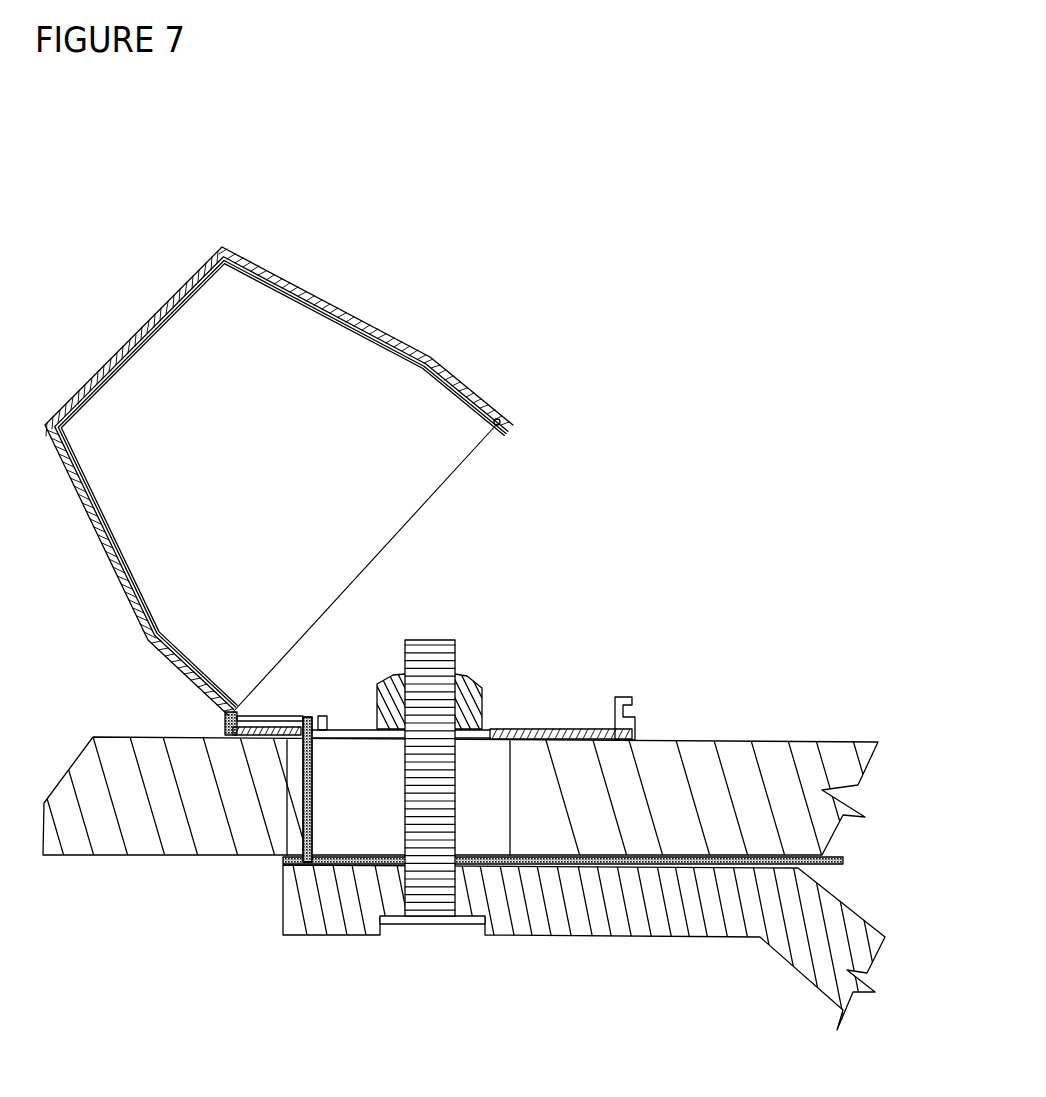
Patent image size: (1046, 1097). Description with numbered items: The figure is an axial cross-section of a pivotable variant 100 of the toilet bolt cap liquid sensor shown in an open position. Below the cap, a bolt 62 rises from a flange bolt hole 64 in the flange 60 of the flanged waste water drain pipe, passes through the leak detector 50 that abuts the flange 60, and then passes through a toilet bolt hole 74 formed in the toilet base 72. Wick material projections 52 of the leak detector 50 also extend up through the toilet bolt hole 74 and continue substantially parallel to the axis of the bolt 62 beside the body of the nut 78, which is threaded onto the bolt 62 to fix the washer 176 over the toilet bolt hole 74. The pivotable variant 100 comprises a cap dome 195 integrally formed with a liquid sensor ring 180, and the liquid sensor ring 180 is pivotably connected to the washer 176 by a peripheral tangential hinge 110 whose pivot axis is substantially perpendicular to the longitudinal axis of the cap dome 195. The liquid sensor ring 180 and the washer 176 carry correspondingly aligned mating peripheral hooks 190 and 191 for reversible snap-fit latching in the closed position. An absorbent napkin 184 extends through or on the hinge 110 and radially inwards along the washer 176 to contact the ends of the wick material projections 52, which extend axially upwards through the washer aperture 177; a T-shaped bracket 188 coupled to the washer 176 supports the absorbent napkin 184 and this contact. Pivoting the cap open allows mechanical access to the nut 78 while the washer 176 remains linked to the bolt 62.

The pivotable variant 100 is at (606, 286).
The cap dome 195 is at (325, 295).
The liquid sensor ring 180 is at (480, 390).
The peripheral hook 190 is at (497, 435).
The hinge 110 is at (226, 726).
The absorbent napkin 184 is at (323, 716).
The T-shaped bracket 188 is at (330, 718).
The nut 78 is at (474, 682).
The washer aperture 177 is at (490, 730).
The washer 176 is at (548, 730).
The peripheral hook 191 is at (632, 705).
The wick material projections 52 is at (314, 768).
The toilet bolt holes 74 is at (290, 822).
The toilet base 72 is at (178, 832).
The leak detector 50 is at (805, 861).
The flange 60 is at (577, 920).
The flange bolt holes 64 is at (405, 893).
The bolts 62 is at (431, 925).